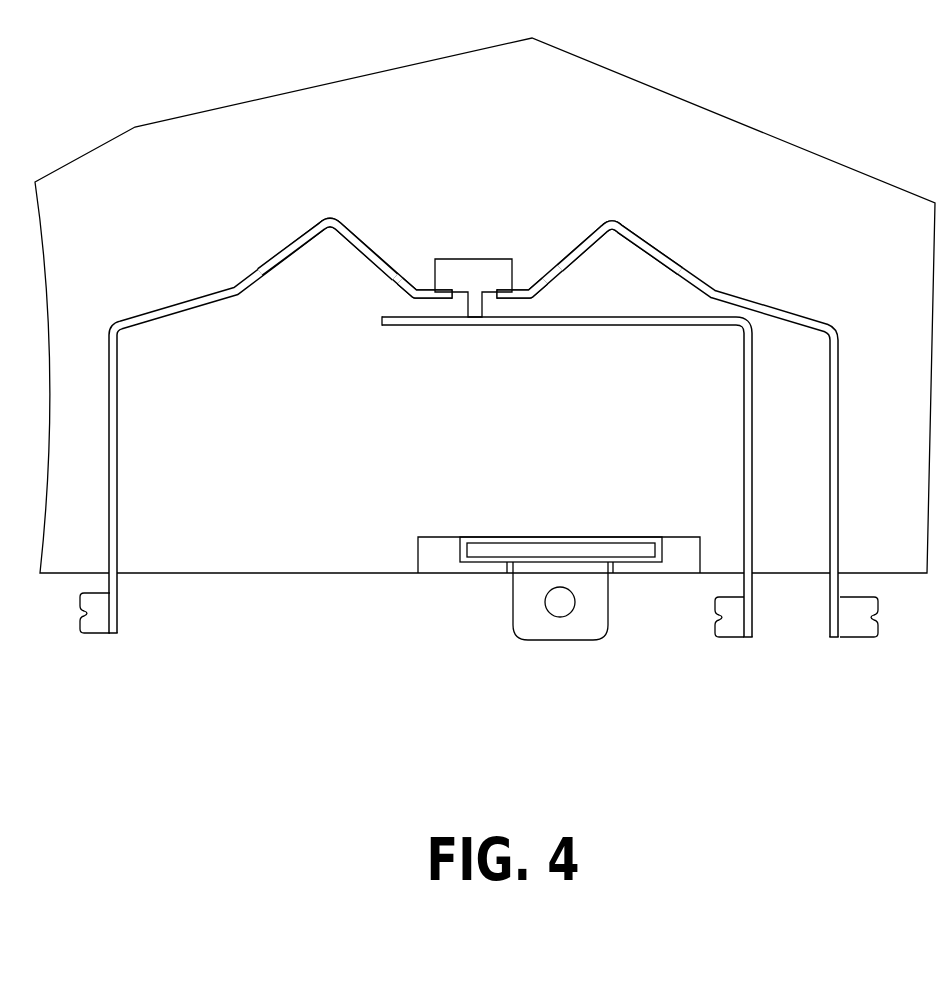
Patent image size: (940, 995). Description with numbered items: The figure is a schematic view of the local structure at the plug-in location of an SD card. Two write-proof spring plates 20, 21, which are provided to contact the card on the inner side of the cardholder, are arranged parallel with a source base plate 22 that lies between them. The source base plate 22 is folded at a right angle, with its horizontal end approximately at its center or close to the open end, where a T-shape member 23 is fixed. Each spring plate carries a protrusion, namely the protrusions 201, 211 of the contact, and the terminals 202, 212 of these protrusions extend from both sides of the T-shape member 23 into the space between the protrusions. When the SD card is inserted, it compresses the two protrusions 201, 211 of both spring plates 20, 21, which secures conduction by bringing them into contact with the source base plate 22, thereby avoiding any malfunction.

The write-proof spring plate 20 is at (120, 483).
The protrusion 201 is at (333, 224).
The terminal 202 is at (437, 298).
The write-proof spring plate 21 is at (840, 512).
The protrusion 211 is at (617, 224).
The terminal 212 is at (518, 295).
The source base plate 22 is at (418, 327).
The T-shape member 23 is at (487, 275).